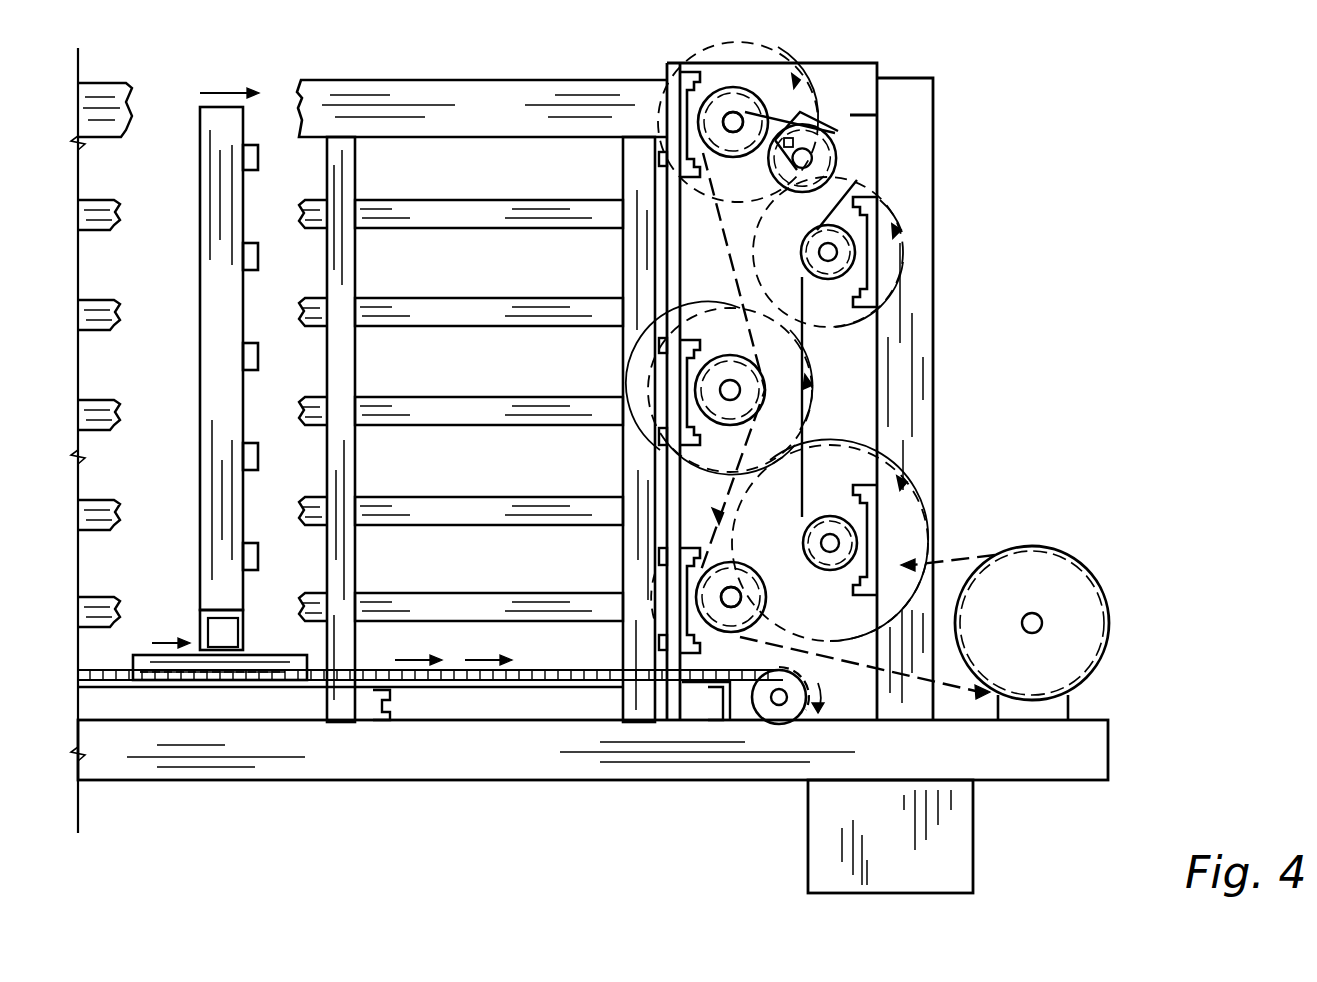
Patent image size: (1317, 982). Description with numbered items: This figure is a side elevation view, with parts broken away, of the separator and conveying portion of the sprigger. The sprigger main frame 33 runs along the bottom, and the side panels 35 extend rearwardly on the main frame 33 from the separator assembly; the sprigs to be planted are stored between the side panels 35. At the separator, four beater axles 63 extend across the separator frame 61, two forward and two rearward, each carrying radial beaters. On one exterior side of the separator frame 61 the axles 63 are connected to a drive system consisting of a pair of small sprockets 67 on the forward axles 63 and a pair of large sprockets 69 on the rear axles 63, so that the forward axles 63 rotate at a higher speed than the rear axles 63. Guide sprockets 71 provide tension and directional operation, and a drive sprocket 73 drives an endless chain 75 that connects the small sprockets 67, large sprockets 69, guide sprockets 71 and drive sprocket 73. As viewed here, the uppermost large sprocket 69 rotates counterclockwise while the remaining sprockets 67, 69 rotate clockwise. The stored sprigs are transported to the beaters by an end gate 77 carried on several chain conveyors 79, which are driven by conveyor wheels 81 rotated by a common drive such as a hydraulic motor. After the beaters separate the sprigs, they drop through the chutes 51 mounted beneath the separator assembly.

The main frame 33 is at (270, 767).
The side panels 35 is at (445, 97).
The chutes 51 is at (955, 842).
The separator frame 61 is at (907, 97).
The beater axles 63 is at (737, 120).
The small sprockets 67 is at (873, 290).
The large sprockets 69 is at (732, 97).
The guide sprockets 71 is at (862, 178).
The drive sprocket 73 is at (1095, 596).
The endless chain 75 is at (985, 556).
The end gate 77 is at (212, 147).
The chain conveyors 79 is at (473, 677).
The conveyor wheels 81 is at (784, 710).